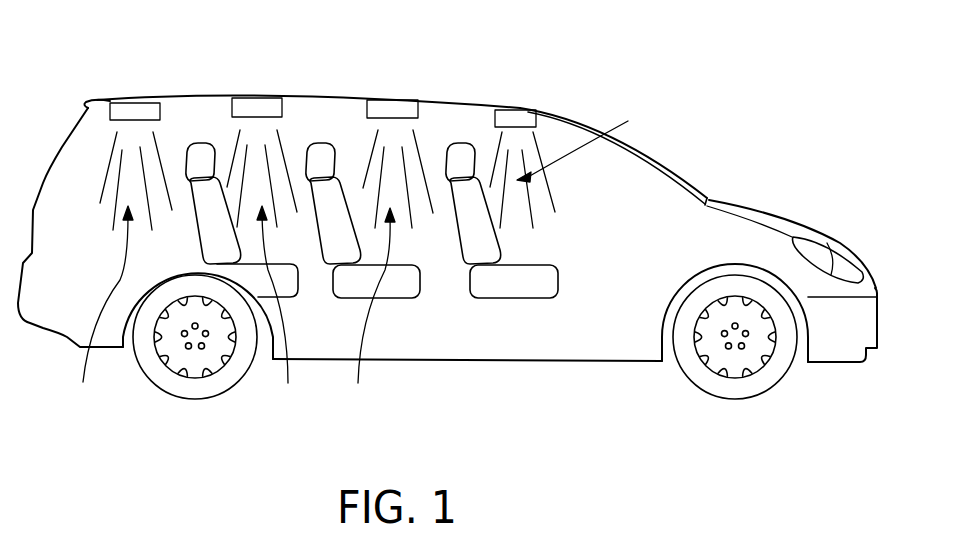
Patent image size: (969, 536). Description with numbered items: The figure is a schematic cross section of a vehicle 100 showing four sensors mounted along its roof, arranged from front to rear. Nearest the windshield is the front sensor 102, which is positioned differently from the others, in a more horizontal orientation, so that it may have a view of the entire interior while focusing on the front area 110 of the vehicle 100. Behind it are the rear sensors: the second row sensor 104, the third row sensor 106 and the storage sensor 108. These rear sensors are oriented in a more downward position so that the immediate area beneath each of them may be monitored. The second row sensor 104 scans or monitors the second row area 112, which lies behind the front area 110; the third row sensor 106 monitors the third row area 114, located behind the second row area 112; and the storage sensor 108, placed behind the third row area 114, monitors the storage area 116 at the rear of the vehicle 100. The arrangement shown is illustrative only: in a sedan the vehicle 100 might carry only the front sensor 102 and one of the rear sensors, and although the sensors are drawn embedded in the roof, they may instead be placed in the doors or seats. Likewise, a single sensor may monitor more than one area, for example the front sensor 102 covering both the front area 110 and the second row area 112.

The vehicle 100 is at (488, 101).
The front sensor 102 is at (525, 120).
The second row sensor 104 is at (390, 108).
The third row sensor 106 is at (253, 106).
The storage sensor 108 is at (133, 108).
The front area 110 is at (593, 145).
The second row area 112 is at (371, 308).
The third row area 114 is at (280, 307).
The storage area 116 is at (101, 307).